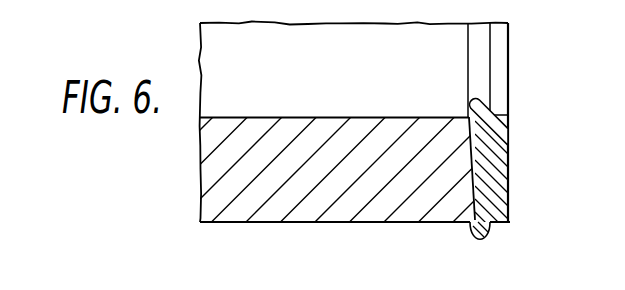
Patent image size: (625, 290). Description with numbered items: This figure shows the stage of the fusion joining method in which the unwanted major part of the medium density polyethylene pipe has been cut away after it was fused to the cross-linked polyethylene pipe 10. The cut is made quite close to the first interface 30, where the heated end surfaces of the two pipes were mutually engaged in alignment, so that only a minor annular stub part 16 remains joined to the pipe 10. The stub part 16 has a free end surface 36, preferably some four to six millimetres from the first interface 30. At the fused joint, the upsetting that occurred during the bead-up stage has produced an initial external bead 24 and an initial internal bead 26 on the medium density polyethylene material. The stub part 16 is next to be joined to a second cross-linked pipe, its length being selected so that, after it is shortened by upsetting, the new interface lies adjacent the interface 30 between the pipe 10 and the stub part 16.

The pipe 10 is at (323, 133).
The stub part 16 is at (500, 134).
The external bead 24 is at (490, 237).
The internal bead 26 is at (486, 106).
The first interface 30 is at (471, 173).
The free end surface 36 is at (511, 172).